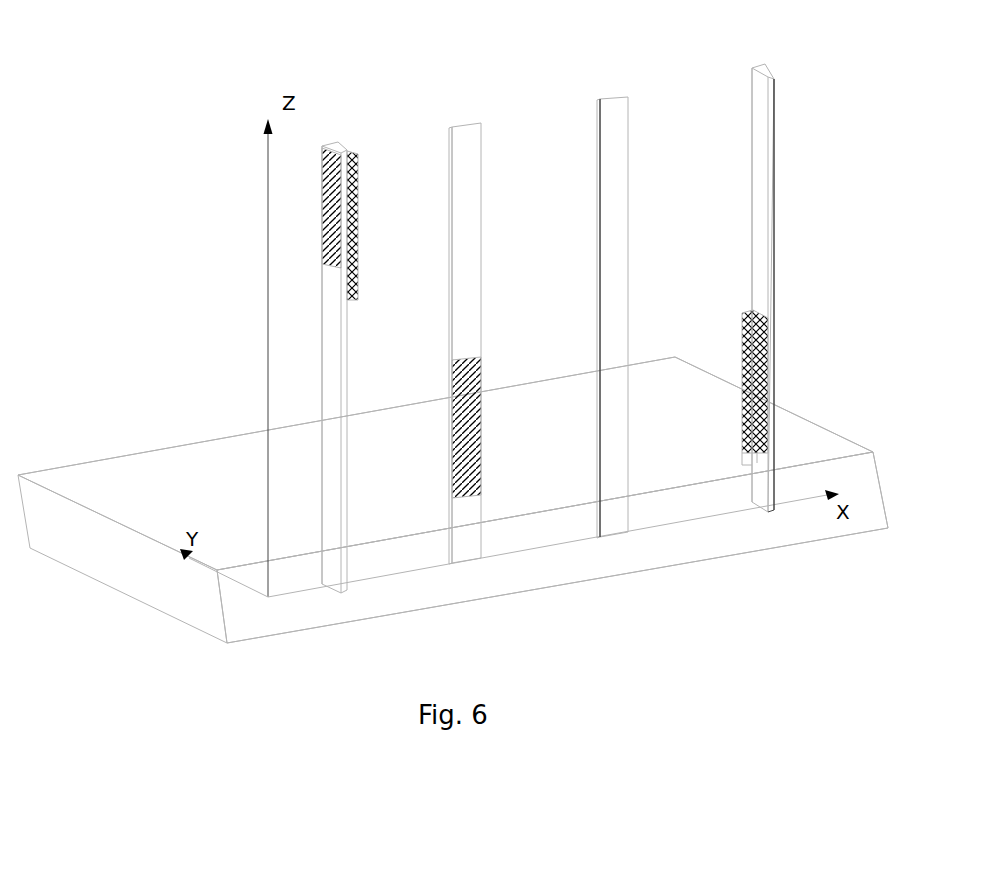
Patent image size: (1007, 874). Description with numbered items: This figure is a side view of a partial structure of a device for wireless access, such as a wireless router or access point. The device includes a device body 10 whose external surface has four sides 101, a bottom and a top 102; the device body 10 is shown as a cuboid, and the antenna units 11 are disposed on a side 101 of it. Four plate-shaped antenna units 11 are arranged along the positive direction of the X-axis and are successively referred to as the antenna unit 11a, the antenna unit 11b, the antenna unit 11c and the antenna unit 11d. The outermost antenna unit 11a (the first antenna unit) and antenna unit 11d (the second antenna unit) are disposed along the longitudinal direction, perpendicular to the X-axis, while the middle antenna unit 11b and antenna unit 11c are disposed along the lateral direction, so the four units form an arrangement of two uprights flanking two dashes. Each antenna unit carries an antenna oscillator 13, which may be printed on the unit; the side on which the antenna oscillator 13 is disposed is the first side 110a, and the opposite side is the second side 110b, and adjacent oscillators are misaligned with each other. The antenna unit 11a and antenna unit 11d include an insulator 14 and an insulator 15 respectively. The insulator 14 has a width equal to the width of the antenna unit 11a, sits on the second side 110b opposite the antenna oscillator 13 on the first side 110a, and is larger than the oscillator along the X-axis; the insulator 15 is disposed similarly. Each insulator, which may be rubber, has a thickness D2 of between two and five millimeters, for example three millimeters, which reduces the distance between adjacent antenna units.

The device body 10 is at (165, 455).
The side 101 is at (777, 534).
The top 102 is at (218, 457).
The antenna units 11 is at (559, 303).
The antenna unit 11a is at (325, 144).
The antenna unit 11b is at (480, 120).
The antenna unit 11c is at (630, 97).
The antenna unit 11d is at (765, 66).
The antenna oscillator 13 is at (328, 232).
The insulator 14 is at (353, 242).
The insulator 15 is at (745, 356).
The first side 110a is at (328, 325).
The second side 110b is at (755, 208).
The thickness D2 is at (753, 465).